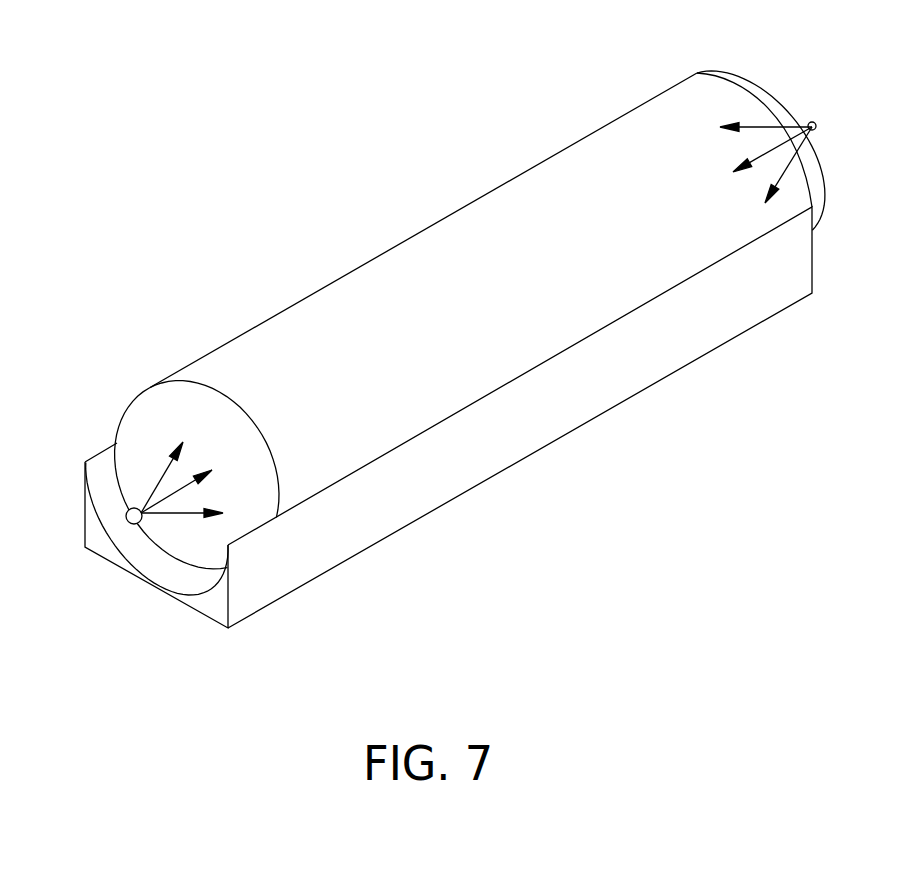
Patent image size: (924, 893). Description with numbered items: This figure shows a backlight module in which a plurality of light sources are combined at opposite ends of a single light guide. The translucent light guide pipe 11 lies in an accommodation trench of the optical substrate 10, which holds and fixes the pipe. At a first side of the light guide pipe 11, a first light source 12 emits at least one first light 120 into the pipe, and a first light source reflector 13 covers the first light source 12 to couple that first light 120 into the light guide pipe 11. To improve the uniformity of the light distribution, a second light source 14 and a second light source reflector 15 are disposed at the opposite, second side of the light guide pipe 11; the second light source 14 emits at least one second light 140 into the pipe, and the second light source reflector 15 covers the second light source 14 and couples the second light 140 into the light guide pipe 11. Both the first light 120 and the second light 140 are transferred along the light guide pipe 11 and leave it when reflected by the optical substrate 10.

The optical substrate 10 is at (545, 445).
The light guide pipe 11 is at (403, 273).
The first light source 12 is at (127, 517).
The first light source reflector 13 is at (143, 412).
The second light source 14 is at (815, 124).
The second light source reflector 15 is at (750, 82).
The first light 120 is at (173, 453).
The second light 140 is at (733, 123).